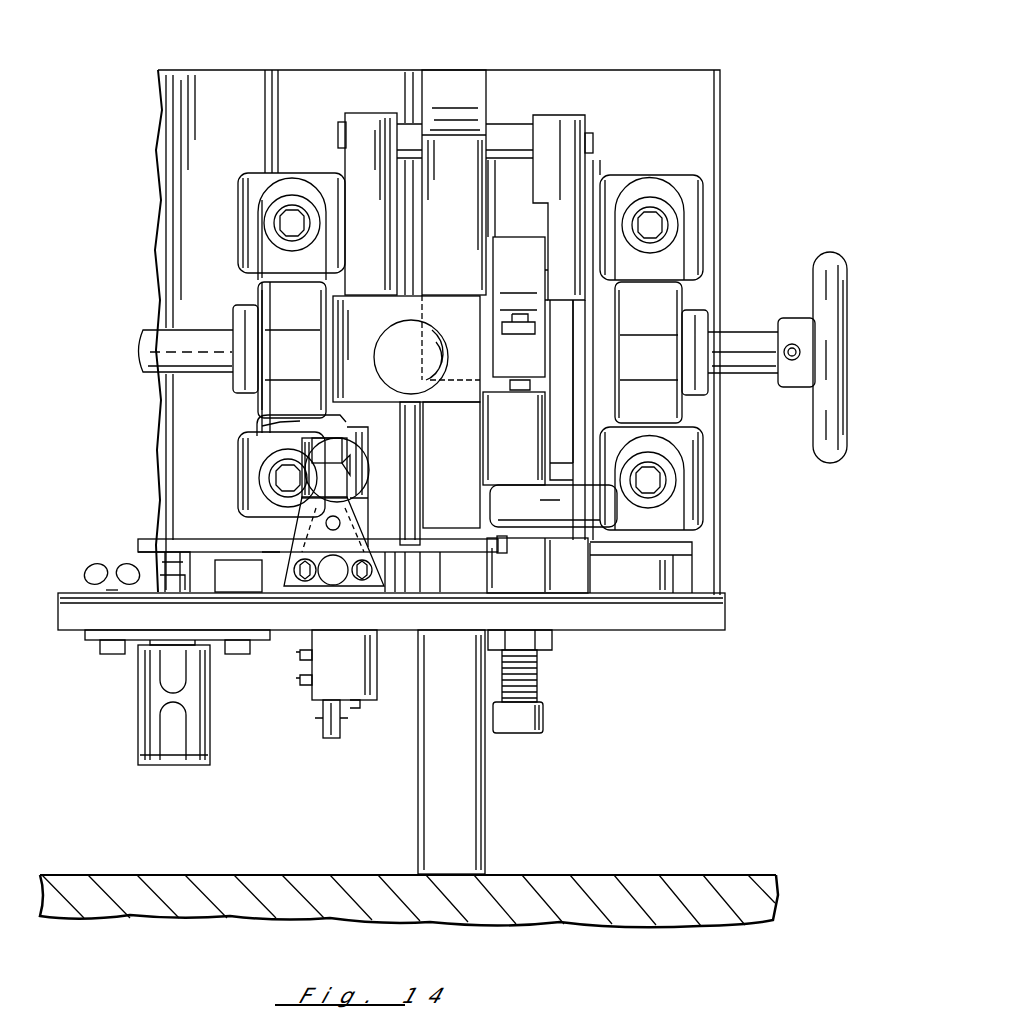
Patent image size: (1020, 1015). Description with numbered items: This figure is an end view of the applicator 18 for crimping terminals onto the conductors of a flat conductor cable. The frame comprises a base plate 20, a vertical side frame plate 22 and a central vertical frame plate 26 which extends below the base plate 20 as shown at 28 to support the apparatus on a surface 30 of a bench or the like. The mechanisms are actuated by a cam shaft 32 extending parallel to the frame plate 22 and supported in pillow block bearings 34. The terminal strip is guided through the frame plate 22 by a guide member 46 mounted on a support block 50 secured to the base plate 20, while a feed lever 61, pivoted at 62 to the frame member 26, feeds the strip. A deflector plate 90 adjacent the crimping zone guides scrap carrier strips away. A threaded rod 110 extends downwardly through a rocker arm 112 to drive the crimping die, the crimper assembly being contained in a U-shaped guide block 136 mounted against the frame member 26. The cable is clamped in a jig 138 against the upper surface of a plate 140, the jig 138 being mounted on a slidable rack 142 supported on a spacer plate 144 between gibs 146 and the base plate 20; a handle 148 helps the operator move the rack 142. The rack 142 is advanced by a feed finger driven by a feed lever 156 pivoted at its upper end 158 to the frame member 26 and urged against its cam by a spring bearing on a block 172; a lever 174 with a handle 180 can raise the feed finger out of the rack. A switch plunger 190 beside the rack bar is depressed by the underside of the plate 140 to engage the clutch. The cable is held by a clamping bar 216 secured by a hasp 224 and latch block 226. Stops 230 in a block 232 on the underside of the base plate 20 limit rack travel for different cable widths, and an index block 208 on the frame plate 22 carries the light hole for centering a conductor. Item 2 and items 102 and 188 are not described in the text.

The article 2 is at (165, 530).
The applicator 18 is at (58, 82).
The base plate 20 is at (668, 612).
The vertical side frame plate 22 is at (313, 70).
The central vertical frame plate 26 is at (458, 85).
The extension of the central vertical frame plate 28 is at (425, 800).
The surface of a bench 30 is at (614, 876).
The cam shaft 32 is at (143, 345).
The pillow block bearings 34 is at (470, 351).
The right guide member 46 is at (641, 567).
The support block 50 is at (685, 577).
The feed lever 61 is at (557, 125).
The pivot of the feed lever 62 is at (592, 148).
The deflector plate 90 is at (553, 506).
The adjusting bolt 102 is at (530, 685).
The threaded rod 110 is at (515, 312).
The rocker arm 112 is at (519, 275).
The U-shaped guide block 136 is at (514, 438).
The jig 138 is at (138, 545).
The plate 140 is at (436, 545).
The slidable rack 142 is at (300, 570).
The spacer plate 144 is at (398, 592).
The gibs 146 is at (410, 580).
The handle 148 is at (262, 425).
The feed lever 156 is at (370, 118).
The upper end of the feed lever 158 is at (340, 140).
The block 172 is at (406, 349).
The lever 174 is at (412, 445).
The handle 180 is at (420, 335).
The tube 188 is at (143, 716).
The switch plunger 190 is at (172, 578).
The index block 208 is at (548, 578).
The clamping bar 216 is at (337, 450).
The hasp 224 is at (330, 480).
The latch block 226 is at (360, 510).
The stops 230 is at (330, 738).
The block 232 is at (362, 680).